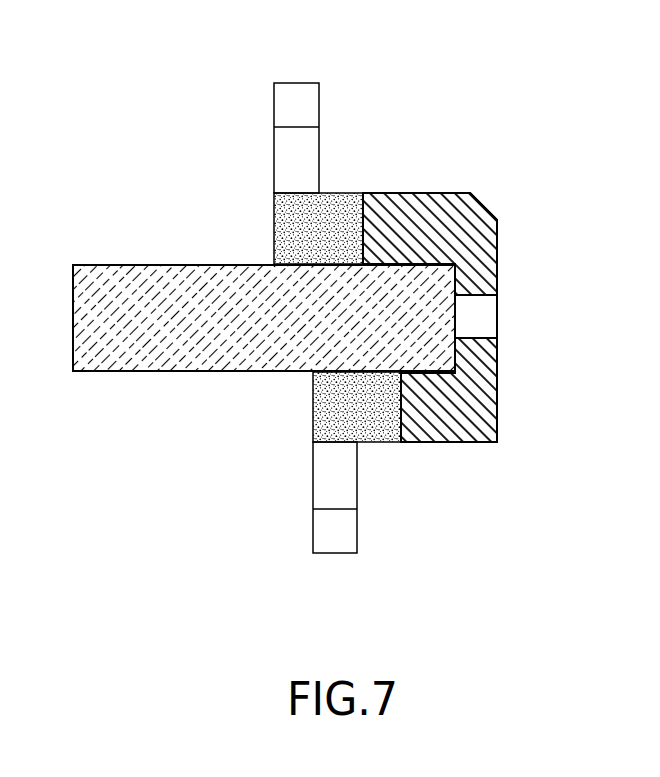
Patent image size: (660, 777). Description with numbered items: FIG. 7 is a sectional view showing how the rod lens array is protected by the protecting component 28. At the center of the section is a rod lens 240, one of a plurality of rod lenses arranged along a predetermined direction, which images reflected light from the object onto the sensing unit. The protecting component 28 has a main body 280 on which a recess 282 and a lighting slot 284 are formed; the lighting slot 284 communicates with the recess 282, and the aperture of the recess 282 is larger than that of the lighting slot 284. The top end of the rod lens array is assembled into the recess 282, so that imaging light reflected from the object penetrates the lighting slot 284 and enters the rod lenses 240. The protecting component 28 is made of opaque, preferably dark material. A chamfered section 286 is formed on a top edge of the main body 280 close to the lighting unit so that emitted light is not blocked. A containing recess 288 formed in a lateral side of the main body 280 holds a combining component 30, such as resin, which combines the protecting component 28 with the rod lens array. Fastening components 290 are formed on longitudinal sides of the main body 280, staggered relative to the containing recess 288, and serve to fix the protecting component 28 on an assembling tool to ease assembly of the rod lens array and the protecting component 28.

The protecting component 28 is at (488, 306).
The combining component 30 is at (273, 230).
The rod lens 240 is at (165, 352).
The main body 280 is at (477, 422).
The recess 282 is at (427, 374).
The lighting slot 284 is at (478, 320).
The chamfered section 286 is at (487, 207).
The containing recess 288 is at (398, 233).
The fastening component 290 is at (300, 95).